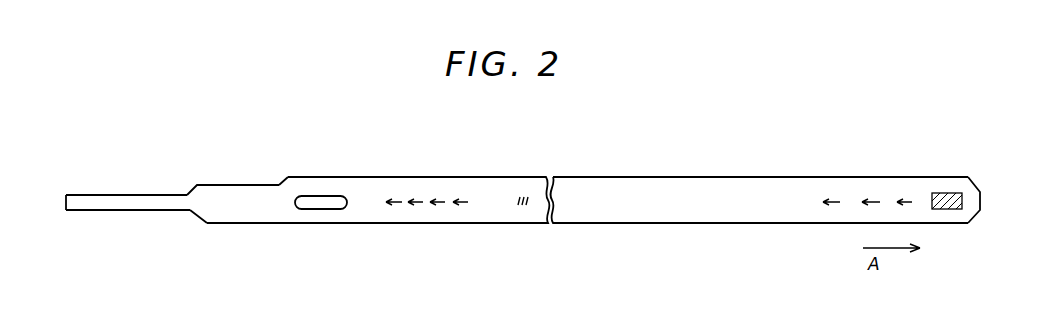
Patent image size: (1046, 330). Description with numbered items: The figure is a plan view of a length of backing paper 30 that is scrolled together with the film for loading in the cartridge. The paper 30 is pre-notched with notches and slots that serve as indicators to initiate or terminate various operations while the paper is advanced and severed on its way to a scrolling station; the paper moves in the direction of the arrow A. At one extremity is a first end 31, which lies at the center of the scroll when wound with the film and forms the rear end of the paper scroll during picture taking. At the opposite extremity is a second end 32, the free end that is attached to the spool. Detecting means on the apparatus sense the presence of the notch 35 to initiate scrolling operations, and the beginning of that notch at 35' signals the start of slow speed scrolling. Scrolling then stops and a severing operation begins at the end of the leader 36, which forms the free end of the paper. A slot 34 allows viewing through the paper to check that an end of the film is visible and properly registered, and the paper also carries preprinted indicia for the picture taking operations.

The backing paper 30 is at (445, 160).
The first end 31 is at (985, 214).
The second end 32 is at (58, 194).
The slot 34 is at (305, 204).
The notch 35 is at (233, 181).
The beginning of notch 35' is at (286, 146).
The leader 36 is at (106, 202).